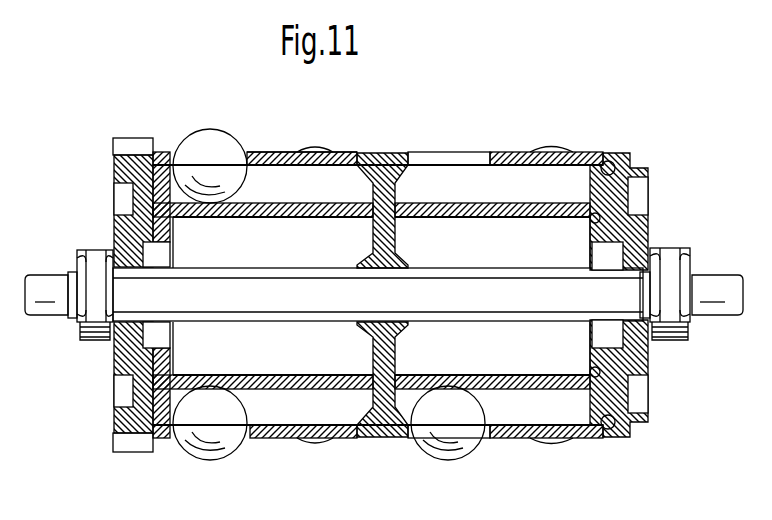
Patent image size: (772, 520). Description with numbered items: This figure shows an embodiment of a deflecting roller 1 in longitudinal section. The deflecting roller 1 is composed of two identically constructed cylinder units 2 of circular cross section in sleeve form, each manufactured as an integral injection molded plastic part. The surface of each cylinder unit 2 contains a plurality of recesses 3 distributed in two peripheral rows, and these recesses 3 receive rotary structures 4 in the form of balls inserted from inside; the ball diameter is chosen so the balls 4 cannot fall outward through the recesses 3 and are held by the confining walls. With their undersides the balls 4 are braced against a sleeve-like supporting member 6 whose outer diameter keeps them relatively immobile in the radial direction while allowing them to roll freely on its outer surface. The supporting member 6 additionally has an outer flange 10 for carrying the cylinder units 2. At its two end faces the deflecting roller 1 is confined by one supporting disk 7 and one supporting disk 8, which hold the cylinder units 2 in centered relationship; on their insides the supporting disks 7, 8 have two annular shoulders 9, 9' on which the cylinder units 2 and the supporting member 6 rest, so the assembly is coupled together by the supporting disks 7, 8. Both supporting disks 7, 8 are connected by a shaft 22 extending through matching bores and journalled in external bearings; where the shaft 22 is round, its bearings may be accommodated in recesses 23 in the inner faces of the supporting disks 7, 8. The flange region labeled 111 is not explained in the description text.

The deflecting roller 1 is at (363, 148).
The cylinder unit 2 is at (262, 150).
The recess 3 is at (432, 152).
The rotary structure 4 is at (213, 132).
The supporting member 6 is at (287, 218).
The supporting disk 7 is at (118, 372).
The supporting disk 8 is at (648, 172).
The annular shoulder 9 is at (457, 272).
The annular shoulder 9' is at (573, 295).
The outer flange 10 is at (383, 438).
The shaft 22 is at (710, 312).
The recess 23 is at (173, 332).
The flange 111 is at (141, 138).